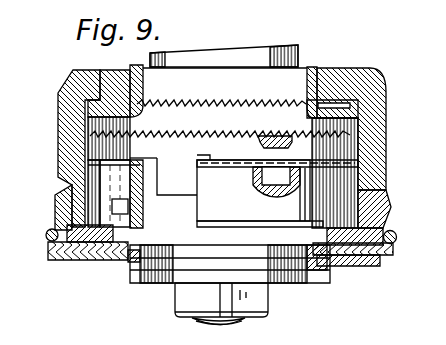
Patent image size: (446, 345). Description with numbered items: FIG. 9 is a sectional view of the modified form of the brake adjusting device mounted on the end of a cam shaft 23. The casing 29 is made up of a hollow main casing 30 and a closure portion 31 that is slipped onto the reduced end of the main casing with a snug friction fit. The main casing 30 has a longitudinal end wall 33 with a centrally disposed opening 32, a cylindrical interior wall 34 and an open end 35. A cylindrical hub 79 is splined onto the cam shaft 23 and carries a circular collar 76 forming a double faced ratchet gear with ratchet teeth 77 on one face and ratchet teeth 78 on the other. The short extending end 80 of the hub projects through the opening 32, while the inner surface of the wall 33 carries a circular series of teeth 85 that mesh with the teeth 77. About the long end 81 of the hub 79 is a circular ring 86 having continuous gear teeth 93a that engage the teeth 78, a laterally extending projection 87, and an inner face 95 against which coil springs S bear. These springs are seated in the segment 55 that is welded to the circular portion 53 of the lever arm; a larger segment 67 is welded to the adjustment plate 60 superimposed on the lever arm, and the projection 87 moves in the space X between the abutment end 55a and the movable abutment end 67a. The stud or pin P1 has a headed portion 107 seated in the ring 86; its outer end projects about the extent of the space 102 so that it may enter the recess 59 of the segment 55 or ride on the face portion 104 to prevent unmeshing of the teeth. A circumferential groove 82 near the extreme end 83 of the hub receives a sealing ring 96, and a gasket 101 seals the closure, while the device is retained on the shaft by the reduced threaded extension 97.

The cam shaft 23 is at (287, 68).
The casing 29 is at (58, 113).
The main casing 30 is at (58, 167).
The closure portion of the casing 31 is at (56, 211).
The centrally disposed opening 32 is at (319, 73).
The longitudinal end wall 33 is at (369, 138).
The cylindrical interior wall 34 is at (360, 124).
The open end 35 is at (368, 223).
The circular portion of the lever arm 53 is at (393, 253).
The segment 55 is at (332, 250).
The abutment end of segment 55 55a is at (191, 228).
The recess 59 is at (272, 196).
The adjustment plate 60 is at (380, 267).
The segment 67 is at (88, 262).
The abutment end of segment 67 67a is at (60, 183).
The circular collar 76 is at (182, 98).
The ratchet teeth 77 is at (210, 130).
The ratchet teeth 78 is at (246, 130).
The cylindrical hub 79 is at (266, 237).
The short extending end 80 is at (132, 83).
The long end of the hub 81 is at (171, 240).
The circumferential groove 82 is at (220, 258).
The extreme end of the hub 83 is at (263, 272).
The circular series of teeth 85 is at (113, 48).
The circular ring 86 is at (233, 158).
The laterally extending projection 87 is at (185, 197).
The gear teeth 93a is at (186, 167).
The inner face of the ring 95 is at (150, 164).
The sealing ring 96 is at (133, 262).
The reduced threaded extension 97 is at (240, 327).
The gasket 101 is at (398, 237).
The space 102 is at (242, 168).
The face portion of segment 55 104 is at (170, 142).
The headed portion 107 is at (379, 173).
The stud or pin P1 is at (273, 135).
The coil springs S is at (322, 172).
The space X is at (145, 199).